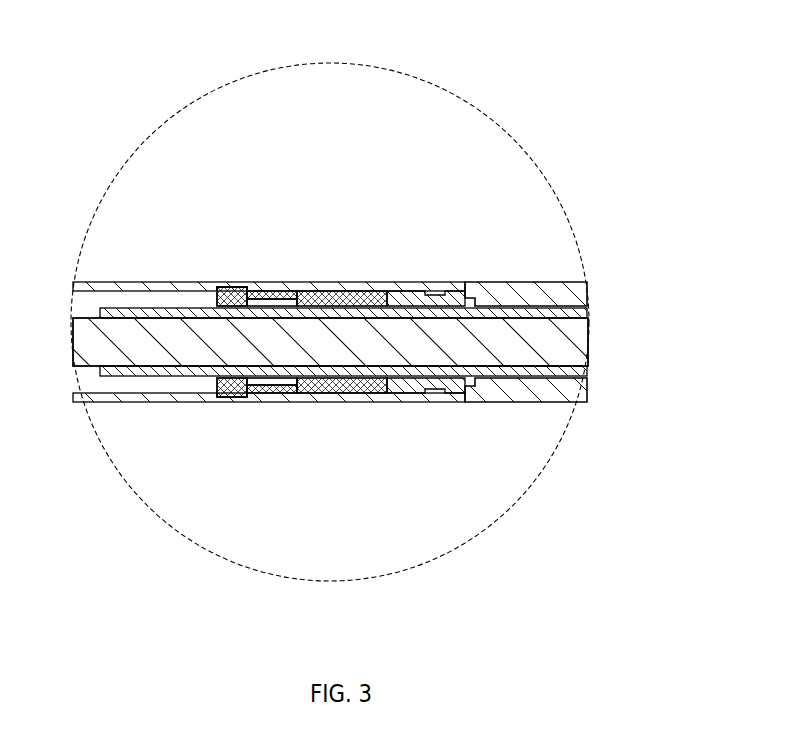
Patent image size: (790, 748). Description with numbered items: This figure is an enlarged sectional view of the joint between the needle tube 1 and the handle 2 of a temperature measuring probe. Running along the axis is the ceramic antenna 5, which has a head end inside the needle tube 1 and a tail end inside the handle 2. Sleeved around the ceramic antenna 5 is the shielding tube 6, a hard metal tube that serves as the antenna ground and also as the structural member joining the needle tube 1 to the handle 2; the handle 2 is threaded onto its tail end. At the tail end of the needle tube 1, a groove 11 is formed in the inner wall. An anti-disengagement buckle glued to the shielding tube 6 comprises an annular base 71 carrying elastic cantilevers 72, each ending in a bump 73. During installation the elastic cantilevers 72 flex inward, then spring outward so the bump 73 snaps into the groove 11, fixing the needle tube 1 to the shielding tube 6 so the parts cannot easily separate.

The needle tube 1 is at (143, 284).
The handle 2 is at (528, 297).
The ceramic antenna 5 is at (550, 347).
The shielding tube 6 is at (423, 290).
The groove 11 is at (222, 287).
The annular base 71 is at (307, 292).
The elastic cantilevers 72 is at (273, 291).
The bump 73 is at (233, 288).